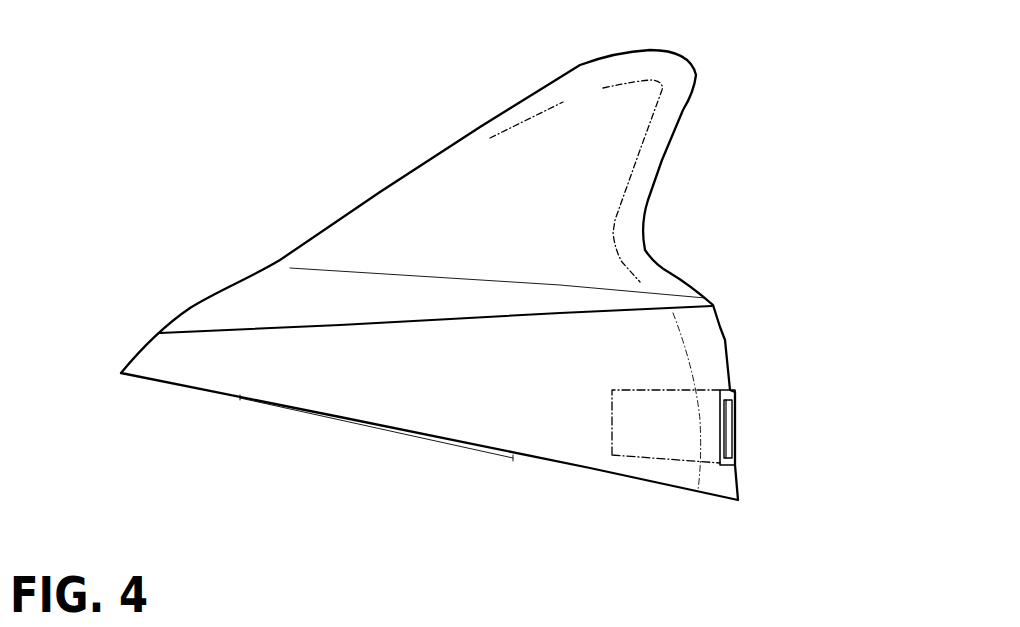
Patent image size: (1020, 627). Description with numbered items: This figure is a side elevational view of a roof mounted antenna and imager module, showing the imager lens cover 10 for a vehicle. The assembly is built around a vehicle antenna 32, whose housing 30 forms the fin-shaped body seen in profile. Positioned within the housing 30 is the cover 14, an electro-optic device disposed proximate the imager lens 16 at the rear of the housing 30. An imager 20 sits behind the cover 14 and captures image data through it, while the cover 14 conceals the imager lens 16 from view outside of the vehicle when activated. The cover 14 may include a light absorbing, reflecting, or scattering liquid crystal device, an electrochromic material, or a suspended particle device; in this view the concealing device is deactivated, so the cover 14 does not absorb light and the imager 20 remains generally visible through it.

The imager lens cover 10 is at (848, 348).
The cover 14 is at (730, 392).
The imager lens 16 is at (732, 423).
The imager 20 is at (670, 410).
The housing 30 is at (228, 303).
The vehicle antenna 32 is at (522, 112).